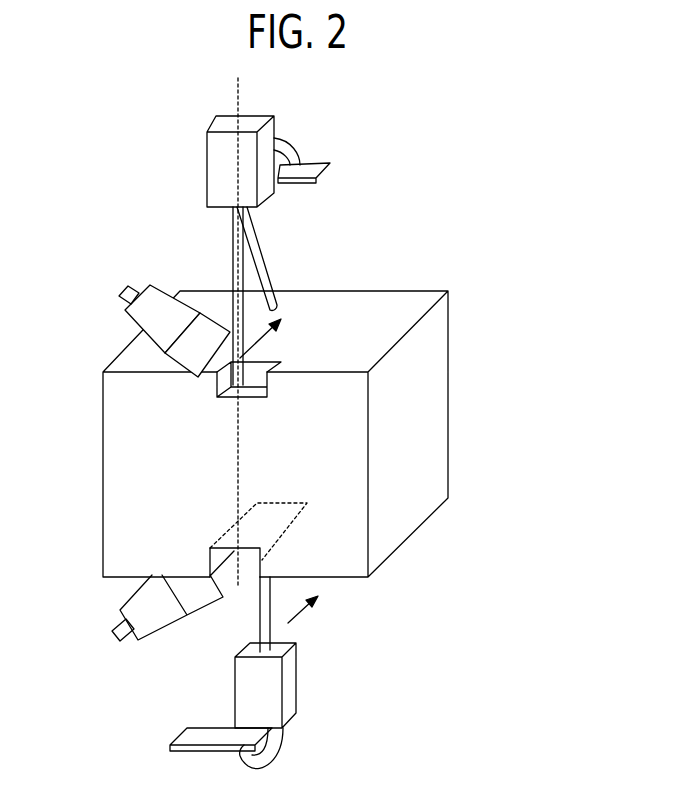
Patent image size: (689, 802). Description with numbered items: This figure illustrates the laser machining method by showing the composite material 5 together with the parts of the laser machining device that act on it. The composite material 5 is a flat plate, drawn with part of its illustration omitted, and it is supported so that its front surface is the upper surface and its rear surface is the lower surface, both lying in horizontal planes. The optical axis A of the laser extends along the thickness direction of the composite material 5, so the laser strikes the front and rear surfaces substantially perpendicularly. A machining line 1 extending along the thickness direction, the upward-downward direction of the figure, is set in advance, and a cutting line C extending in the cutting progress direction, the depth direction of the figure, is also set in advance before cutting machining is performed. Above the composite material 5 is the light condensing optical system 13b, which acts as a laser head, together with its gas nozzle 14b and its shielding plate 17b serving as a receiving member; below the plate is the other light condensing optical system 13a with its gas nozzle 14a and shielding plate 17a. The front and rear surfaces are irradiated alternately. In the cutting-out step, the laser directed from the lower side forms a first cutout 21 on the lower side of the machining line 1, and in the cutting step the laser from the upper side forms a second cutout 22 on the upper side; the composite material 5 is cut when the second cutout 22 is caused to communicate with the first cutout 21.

The machining line 1 is at (230, 473).
The composite material 5 is at (398, 275).
The light condensing optical system 13a is at (297, 692).
The light condensing optical system 13b is at (207, 162).
The gas nozzle 14a is at (148, 642).
The gas nozzle 14b is at (150, 286).
The shielding plate 17a is at (170, 750).
The shielding plate 17b is at (316, 163).
The first cutout 21 is at (307, 505).
The second cutout 22 is at (268, 360).
The optical axis A is at (238, 93).
The cutting line C is at (283, 317).